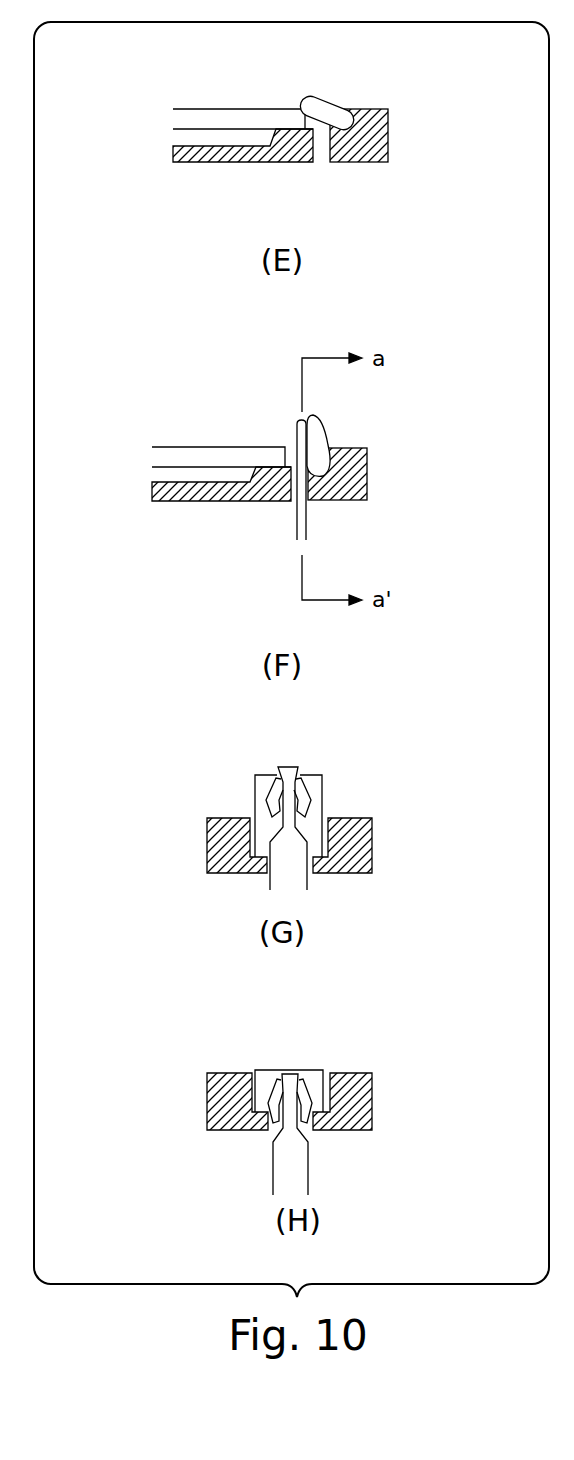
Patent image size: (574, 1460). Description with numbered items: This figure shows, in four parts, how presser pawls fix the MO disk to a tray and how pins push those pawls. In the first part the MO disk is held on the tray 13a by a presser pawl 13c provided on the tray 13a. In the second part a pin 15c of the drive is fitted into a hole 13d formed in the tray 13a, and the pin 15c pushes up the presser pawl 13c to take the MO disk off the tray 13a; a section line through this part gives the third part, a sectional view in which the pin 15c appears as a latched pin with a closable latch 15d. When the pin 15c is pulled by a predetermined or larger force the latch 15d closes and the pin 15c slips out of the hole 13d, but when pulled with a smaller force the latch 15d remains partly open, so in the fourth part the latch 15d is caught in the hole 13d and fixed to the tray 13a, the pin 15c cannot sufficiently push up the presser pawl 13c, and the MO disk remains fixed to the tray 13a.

The tray 13a is at (195, 157).
The presser pawl 13c is at (340, 108).
The hole 13d is at (322, 152).
The pin 15c is at (304, 534).
The latch 15d is at (262, 808).